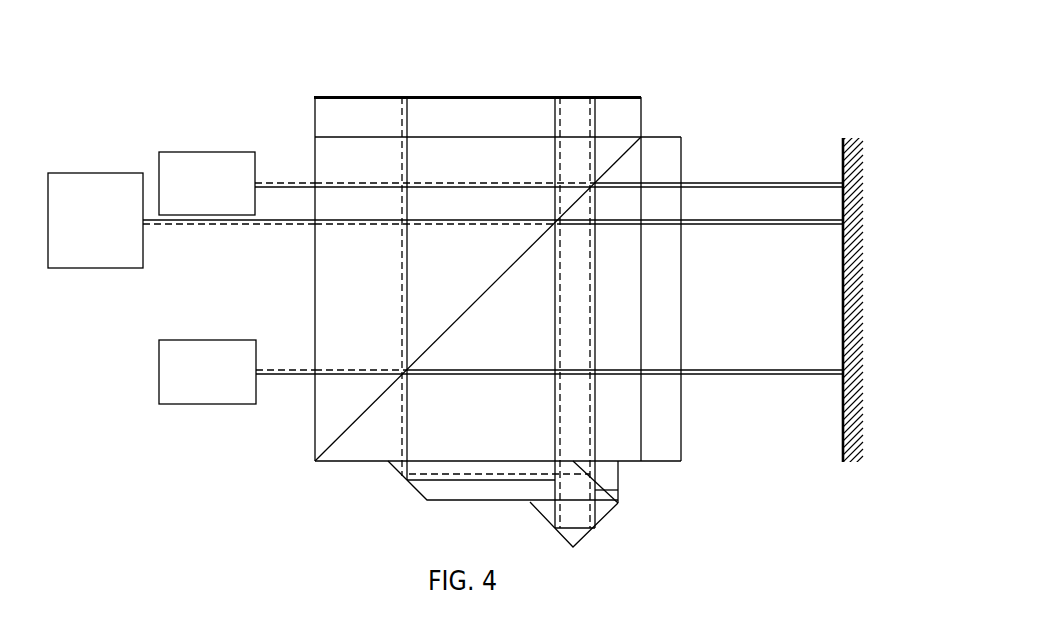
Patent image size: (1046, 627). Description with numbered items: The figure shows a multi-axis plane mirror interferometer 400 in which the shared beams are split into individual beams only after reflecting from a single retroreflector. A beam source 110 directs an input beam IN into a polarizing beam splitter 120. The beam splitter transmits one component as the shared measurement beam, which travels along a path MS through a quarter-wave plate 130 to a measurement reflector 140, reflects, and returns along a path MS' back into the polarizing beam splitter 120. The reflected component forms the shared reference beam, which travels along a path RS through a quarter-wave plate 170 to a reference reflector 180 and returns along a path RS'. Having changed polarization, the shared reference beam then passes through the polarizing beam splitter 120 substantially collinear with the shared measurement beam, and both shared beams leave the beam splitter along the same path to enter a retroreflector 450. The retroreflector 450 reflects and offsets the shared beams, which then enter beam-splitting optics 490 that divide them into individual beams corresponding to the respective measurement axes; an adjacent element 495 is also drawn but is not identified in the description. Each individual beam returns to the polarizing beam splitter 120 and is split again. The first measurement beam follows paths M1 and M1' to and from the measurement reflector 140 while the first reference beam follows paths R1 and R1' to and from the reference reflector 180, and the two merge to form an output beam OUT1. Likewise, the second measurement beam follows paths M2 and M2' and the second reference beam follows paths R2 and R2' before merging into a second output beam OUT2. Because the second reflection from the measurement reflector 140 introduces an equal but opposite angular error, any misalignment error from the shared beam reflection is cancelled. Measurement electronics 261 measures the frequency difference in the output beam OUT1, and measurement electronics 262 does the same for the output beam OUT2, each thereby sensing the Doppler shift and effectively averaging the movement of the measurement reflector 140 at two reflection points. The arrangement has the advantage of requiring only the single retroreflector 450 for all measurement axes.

The multi-axis interferometer 400 is at (174, 66).
The beam source 110 is at (108, 256).
The measurement electronics 261 is at (220, 208).
The measurement electronics 262 is at (220, 395).
The output beam OUT1 is at (285, 171).
The input beam IN is at (229, 235).
The second output beam OUT2 is at (285, 385).
The quarter-wave plate 170 is at (315, 117).
The reference reflector 180 is at (580, 96).
The polarizing beam splitter 120 is at (502, 431).
The quarter-wave plate 130 is at (659, 462).
The measurement reflector 140 is at (842, 158).
The first measurement beam path M1 is at (579, 171).
The first measurement beam return path M1' is at (579, 154).
The shared measurement beam path MS is at (579, 206).
The shared measurement beam return path MS' is at (579, 237).
The second measurement beam path M2 is at (579, 357).
The second measurement beam return path M2' is at (579, 387).
The first reference beam path R1 is at (535, 312).
The first reference beam return path R1' is at (531, 312).
The second reference beam path R2 is at (378, 286).
The second reference beam return path R2' is at (432, 288).
The shared reference beam path RS is at (636, 296).
The shared reference beam return path RS' is at (665, 296).
The retroreflector 450 is at (612, 512).
The beam-splitting optics 490 is at (478, 502).
The mount 495 is at (618, 490).